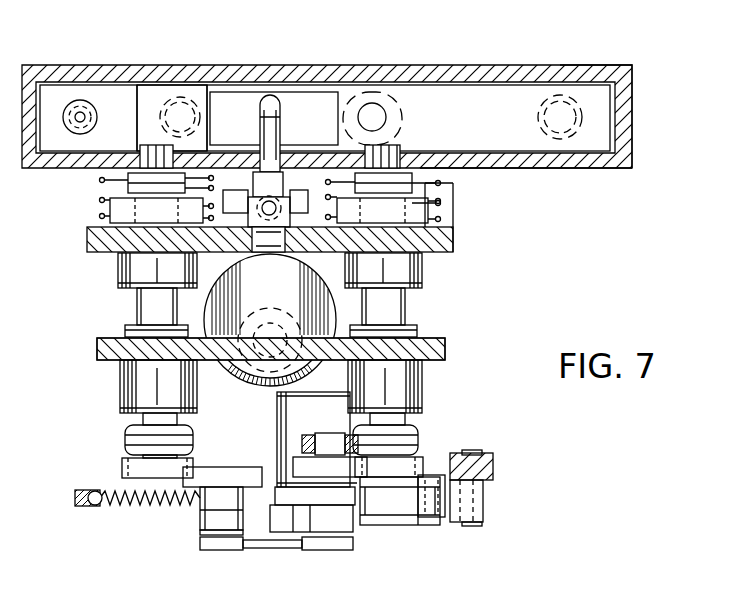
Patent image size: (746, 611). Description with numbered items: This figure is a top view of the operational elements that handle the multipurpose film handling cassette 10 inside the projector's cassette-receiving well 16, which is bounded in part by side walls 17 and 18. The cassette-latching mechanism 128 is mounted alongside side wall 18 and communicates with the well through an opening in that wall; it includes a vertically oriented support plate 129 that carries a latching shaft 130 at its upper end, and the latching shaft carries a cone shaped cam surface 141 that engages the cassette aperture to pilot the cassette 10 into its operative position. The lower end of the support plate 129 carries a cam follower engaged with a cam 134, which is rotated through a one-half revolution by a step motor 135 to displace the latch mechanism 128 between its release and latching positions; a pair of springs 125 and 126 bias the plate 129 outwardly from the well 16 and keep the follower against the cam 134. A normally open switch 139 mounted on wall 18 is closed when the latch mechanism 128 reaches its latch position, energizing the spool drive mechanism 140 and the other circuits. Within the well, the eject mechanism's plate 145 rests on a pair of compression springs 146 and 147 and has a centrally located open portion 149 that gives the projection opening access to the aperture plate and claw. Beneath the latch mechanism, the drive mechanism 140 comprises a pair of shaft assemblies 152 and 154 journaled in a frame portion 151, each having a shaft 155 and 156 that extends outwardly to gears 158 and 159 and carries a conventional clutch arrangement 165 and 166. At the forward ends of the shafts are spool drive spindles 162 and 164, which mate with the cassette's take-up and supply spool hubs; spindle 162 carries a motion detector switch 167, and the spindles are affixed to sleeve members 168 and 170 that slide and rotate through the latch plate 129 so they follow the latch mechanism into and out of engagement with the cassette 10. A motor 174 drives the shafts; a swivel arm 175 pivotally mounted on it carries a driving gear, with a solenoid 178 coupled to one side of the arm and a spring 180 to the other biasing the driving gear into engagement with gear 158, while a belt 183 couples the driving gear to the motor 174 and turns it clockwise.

The multipurpose film handling cassette 10 is at (465, 99).
The cassette-receiving well 16 is at (612, 97).
The side wall 17 is at (616, 68).
The side wall 18 is at (578, 166).
The spring 125 is at (100, 200).
The spring 126 is at (440, 201).
The cassette-latching mechanism 128 is at (458, 243).
The support plate 129 is at (453, 250).
The latching shaft 130 is at (280, 130).
The cam 134 is at (284, 286).
The motor 135 is at (248, 380).
The switch 139 is at (250, 182).
The spool drive mechanism 140 is at (437, 449).
The cone shaped cam surface 141 is at (280, 112).
The plate 145 is at (200, 90).
The compression spring 146 is at (162, 106).
The compression spring 147 is at (543, 105).
The open portion 149 is at (245, 100).
The frame portion 151 is at (445, 352).
The shaft assembly 152 is at (112, 391).
The shaft assembly 154 is at (430, 384).
The shaft 155 is at (137, 308).
The shaft 156 is at (405, 310).
The gear 158 is at (122, 468).
The gear 159 is at (418, 512).
The spool drive spindle 162 is at (140, 150).
The spool drive spindle 164 is at (402, 150).
The clutch arrangement 165 is at (125, 432).
The clutch arrangement 166 is at (420, 432).
The motion detector switch 167 is at (128, 178).
The sleeve member 168 is at (118, 275).
The sleeve member 170 is at (422, 272).
The motor 174 is at (283, 404).
The swivel arm 175 is at (262, 478).
The solenoid 178 is at (395, 525).
The spring 180 is at (140, 505).
The belt 183 is at (280, 550).